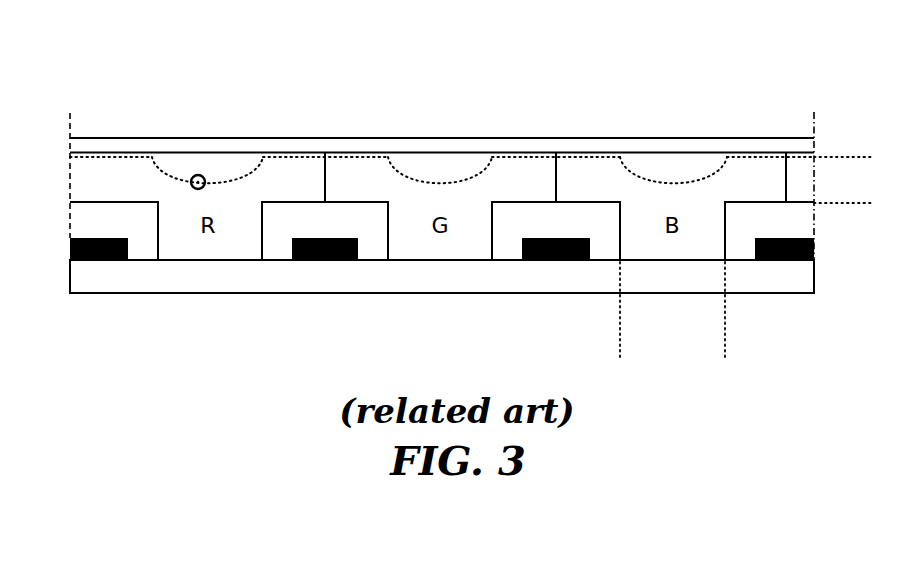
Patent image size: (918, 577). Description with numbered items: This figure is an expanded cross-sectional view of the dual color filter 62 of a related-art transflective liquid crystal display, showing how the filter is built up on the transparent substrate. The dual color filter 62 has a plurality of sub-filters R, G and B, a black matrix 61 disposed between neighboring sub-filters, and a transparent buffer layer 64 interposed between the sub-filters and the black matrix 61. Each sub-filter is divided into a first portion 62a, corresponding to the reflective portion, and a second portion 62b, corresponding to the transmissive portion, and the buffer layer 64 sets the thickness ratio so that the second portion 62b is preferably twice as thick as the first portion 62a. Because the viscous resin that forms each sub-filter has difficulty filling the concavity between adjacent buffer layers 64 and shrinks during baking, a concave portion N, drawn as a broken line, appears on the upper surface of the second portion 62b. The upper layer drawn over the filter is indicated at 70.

The black matrix 61 is at (86, 238).
The dual color filter 62 is at (70, 155).
The first portion 62a is at (849, 157).
The second portion 62b is at (725, 342).
The buffer layer 64 is at (142, 210).
The ink-jet head 70 is at (505, 146).
The concave portion N is at (198, 175).